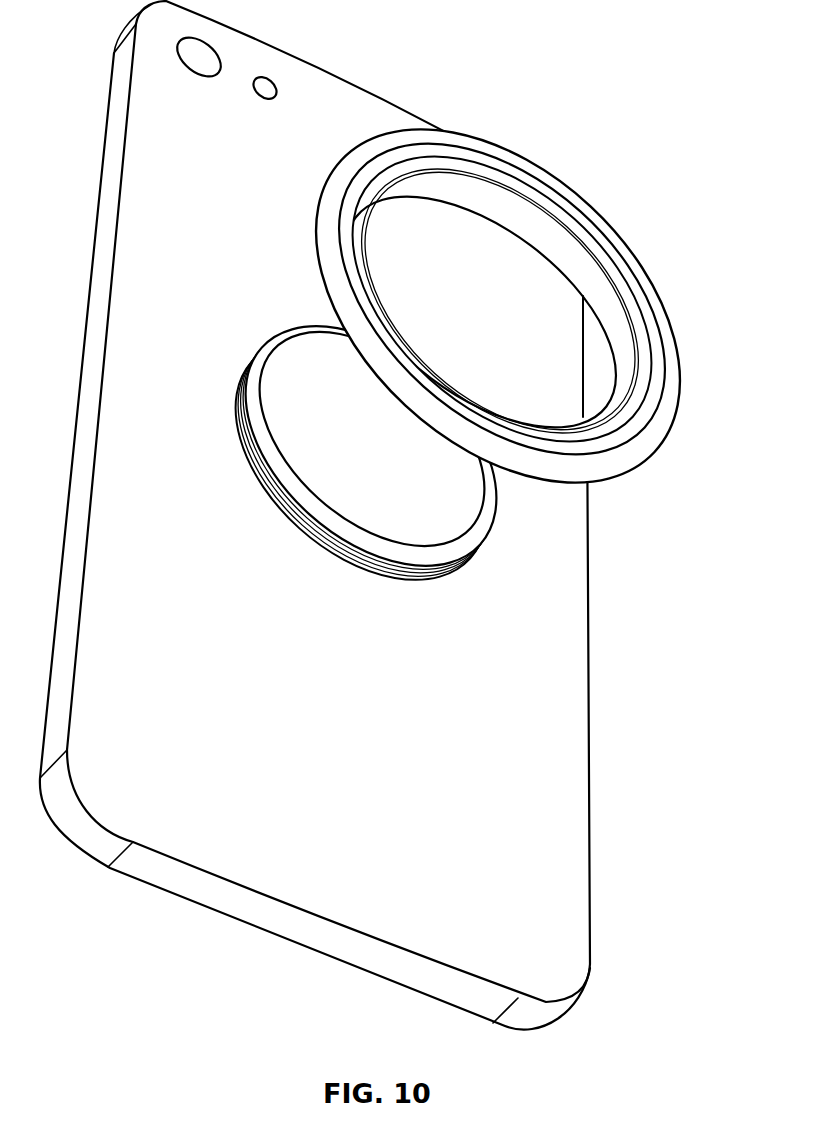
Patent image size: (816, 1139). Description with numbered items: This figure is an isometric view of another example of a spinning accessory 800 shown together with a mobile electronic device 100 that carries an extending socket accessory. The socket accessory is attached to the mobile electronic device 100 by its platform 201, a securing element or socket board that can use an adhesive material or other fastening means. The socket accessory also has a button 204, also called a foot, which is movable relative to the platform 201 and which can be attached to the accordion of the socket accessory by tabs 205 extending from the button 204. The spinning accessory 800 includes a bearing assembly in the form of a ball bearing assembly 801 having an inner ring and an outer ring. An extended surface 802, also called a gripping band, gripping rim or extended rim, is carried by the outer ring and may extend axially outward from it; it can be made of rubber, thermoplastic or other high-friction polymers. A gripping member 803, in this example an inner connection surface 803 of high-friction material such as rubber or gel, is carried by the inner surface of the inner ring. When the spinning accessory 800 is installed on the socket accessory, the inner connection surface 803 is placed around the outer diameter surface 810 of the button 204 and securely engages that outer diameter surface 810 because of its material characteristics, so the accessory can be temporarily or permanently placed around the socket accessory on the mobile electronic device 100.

The mobile electronic device 100 is at (567, 848).
The platform 201 is at (247, 445).
The button 204 is at (463, 508).
The tabs 205 is at (273, 490).
The spinning accessory 800 is at (721, 124).
The ball bearing assembly 801 is at (632, 412).
The extended surface 802 is at (657, 305).
The gripping member 803 is at (583, 270).
The outer diameter surface 810 is at (443, 570).